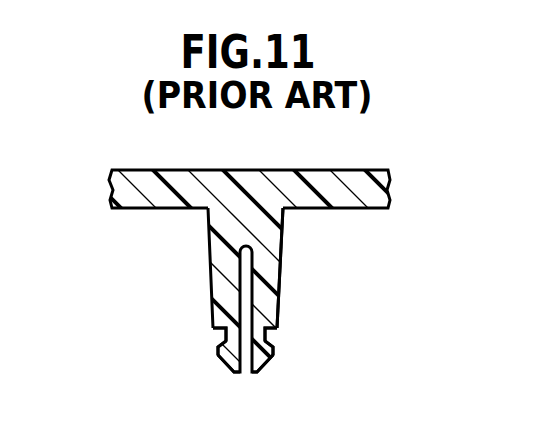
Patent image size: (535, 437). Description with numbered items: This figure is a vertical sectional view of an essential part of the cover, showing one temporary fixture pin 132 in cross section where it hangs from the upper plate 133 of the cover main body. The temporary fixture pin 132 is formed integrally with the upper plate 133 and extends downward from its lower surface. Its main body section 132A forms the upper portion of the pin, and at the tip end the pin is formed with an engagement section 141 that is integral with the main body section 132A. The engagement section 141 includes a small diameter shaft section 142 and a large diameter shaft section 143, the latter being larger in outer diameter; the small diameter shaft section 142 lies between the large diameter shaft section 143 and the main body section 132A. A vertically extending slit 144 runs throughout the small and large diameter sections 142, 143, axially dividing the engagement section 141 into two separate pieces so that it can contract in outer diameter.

The temporary fixture pin 132 is at (198, 237).
The main body section 132A is at (283, 255).
The upper plate 133 is at (131, 171).
The engagement section 141 is at (208, 363).
The small diameter shaft section 142 is at (217, 337).
The large diameter shaft section 143 is at (223, 349).
The slit 144 is at (246, 376).